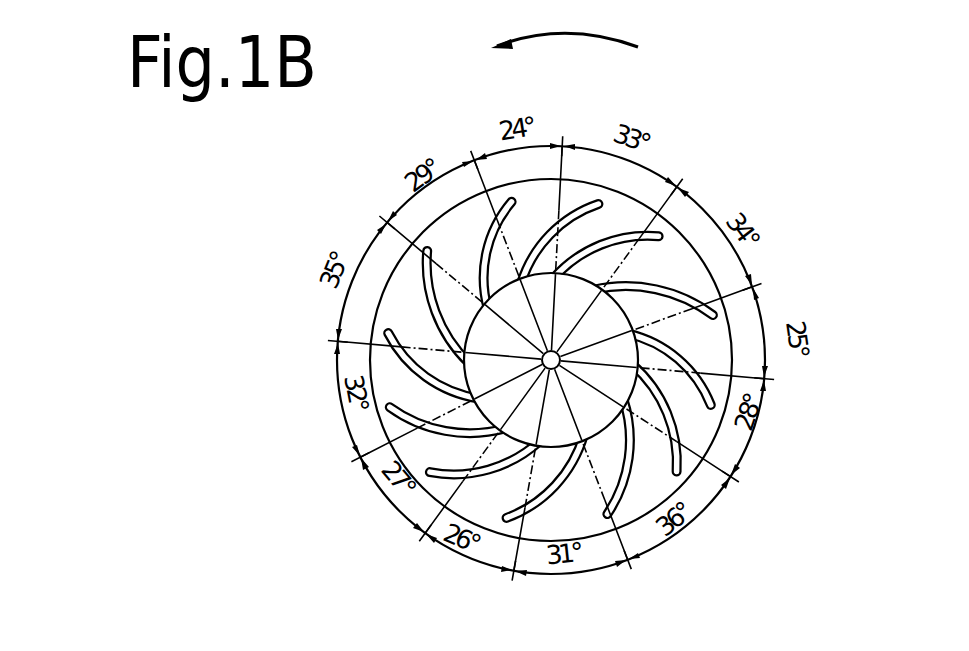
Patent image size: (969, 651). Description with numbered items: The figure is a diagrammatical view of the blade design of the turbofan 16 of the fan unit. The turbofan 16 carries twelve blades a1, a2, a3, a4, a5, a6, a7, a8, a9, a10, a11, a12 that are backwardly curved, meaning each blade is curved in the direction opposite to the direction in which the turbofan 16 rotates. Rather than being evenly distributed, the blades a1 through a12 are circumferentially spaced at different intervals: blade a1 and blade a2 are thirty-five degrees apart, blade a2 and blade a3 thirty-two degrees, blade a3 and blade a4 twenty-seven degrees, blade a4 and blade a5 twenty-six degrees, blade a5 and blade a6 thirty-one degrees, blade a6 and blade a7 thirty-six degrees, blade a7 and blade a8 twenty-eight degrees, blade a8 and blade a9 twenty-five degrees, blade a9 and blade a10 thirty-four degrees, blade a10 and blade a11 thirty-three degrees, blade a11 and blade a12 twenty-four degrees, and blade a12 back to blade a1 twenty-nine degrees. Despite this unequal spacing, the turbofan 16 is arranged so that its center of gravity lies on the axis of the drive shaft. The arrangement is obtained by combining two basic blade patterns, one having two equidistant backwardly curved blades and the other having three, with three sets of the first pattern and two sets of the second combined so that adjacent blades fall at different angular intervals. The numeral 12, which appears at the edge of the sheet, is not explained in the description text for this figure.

The blade a1 is at (511, 199).
The blade a2 is at (425, 246).
The blade a3 is at (385, 333).
The blade a4 is at (388, 408).
The blade a5 is at (418, 483).
The blade a6 is at (504, 524).
The blade a7 is at (610, 520).
The blade a8 is at (680, 477).
The blade a9 is at (714, 410).
The blade a10 is at (715, 318).
The blade a11 is at (661, 233).
The blade a12 is at (601, 203).
The turbofan 16 is at (762, 257).
The fan casing 12 is at (350, 645).